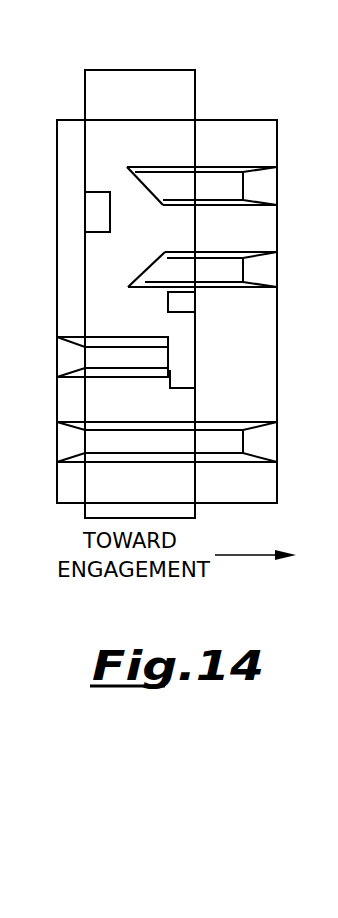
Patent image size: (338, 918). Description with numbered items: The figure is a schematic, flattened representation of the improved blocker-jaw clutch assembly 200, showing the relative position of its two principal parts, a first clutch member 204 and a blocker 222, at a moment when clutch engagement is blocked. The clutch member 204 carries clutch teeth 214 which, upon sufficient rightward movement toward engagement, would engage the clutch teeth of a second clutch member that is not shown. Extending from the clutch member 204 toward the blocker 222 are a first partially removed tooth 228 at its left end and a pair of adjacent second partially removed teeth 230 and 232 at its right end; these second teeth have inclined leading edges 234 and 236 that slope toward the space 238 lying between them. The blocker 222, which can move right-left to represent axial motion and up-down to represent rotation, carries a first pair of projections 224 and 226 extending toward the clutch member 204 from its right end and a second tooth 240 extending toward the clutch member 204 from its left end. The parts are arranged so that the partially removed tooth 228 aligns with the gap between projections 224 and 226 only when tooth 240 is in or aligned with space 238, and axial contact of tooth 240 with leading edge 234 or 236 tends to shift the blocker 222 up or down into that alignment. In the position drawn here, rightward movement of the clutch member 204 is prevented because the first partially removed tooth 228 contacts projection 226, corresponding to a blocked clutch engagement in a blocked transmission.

The blocker-jaw clutch assembly 200 is at (249, 92).
The blocker 222 is at (151, 63).
The second partially removed tooth 230 is at (214, 187).
The inclined leading edge 234 is at (140, 183).
The second partially removed tooth 232 is at (222, 272).
The inclined leading edge 236 is at (148, 270).
The space 238 is at (232, 230).
The second tooth 240 is at (100, 211).
The first projection 224 is at (168, 300).
The first partially removed tooth 228 is at (135, 355).
The first projection 226 is at (183, 378).
The clutch teeth 214 is at (153, 443).
The first clutch member 204 is at (233, 510).